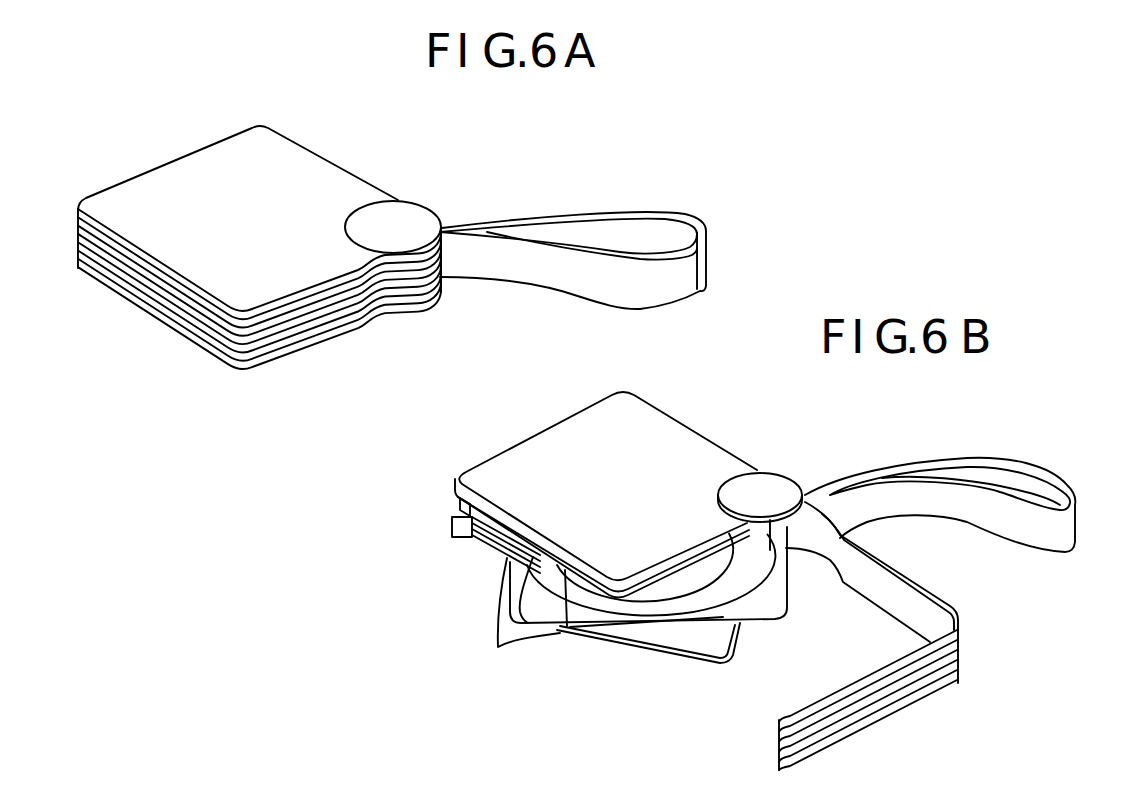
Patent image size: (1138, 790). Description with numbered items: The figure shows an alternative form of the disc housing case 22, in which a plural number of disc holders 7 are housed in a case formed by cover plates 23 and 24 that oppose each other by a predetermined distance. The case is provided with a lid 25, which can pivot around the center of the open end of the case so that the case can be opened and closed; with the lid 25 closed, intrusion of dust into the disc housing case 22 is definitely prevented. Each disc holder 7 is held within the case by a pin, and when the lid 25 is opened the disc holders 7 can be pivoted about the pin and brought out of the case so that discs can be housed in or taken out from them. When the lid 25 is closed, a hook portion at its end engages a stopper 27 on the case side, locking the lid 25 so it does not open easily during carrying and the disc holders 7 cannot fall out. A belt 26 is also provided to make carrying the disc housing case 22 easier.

In FIG. 6A, the disc housing case 22 is at (297, 98).
In FIG. 6B, the disc housing case 22 is at (730, 393).
In FIG. 6A, the cover plate 23 is at (300, 151).
In FIG. 6B, the cover plate 23 is at (555, 435).
In FIG. 6A, the cover plate 24 is at (186, 338).
In FIG. 6B, the cover plate 24 is at (470, 533).
In FIG. 6A, the lid 25 is at (308, 320).
In FIG. 6B, the lid 25 is at (880, 713).
In FIG. 6A, the belt 26 is at (505, 273).
In FIG. 6B, the belt 26 is at (1000, 520).
In FIG. 6B, the stopper 27 is at (458, 506).
In FIG. 6B, the disc holder 7 is at (578, 614).